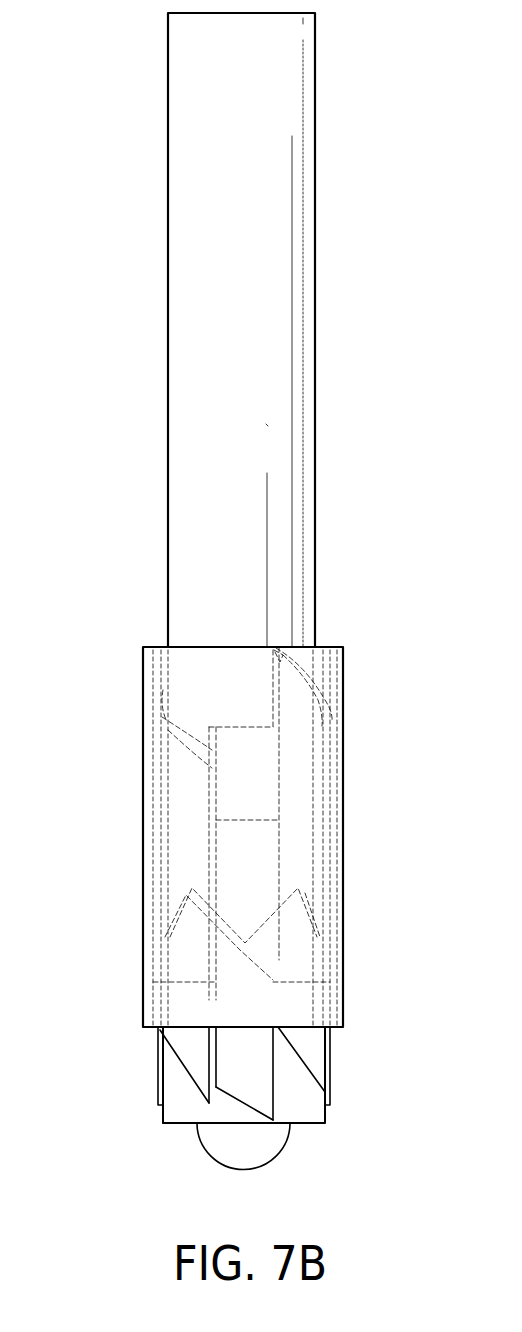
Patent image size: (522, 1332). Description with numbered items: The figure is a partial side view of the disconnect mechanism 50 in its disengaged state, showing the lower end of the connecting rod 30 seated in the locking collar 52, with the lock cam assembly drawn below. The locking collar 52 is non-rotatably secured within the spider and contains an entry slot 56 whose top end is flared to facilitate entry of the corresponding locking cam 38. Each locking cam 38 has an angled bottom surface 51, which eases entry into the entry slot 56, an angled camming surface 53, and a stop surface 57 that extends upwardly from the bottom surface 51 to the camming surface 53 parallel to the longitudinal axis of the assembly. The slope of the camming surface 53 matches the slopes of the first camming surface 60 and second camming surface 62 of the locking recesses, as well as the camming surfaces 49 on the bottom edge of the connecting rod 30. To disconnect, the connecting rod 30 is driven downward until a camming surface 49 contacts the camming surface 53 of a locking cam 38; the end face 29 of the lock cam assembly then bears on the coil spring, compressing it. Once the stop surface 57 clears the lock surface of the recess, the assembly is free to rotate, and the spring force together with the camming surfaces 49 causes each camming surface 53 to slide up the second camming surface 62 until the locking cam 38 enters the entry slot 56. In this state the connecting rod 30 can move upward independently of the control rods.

The end face 29 is at (303, 1125).
The connecting rod 30 is at (278, 318).
The locking cam 38 is at (248, 1067).
The camming surface 49 is at (228, 932).
The disconnect mechanism 50 is at (140, 1049).
The angled bottom surface 51 is at (253, 775).
The locking collar 52 is at (124, 840).
The angled camming surface 53 is at (255, 960).
The entry slot 56 is at (244, 684).
The stop surface 57 is at (220, 992).
The first camming surface 60 is at (162, 1117).
The second camming surface 62 is at (298, 1040).